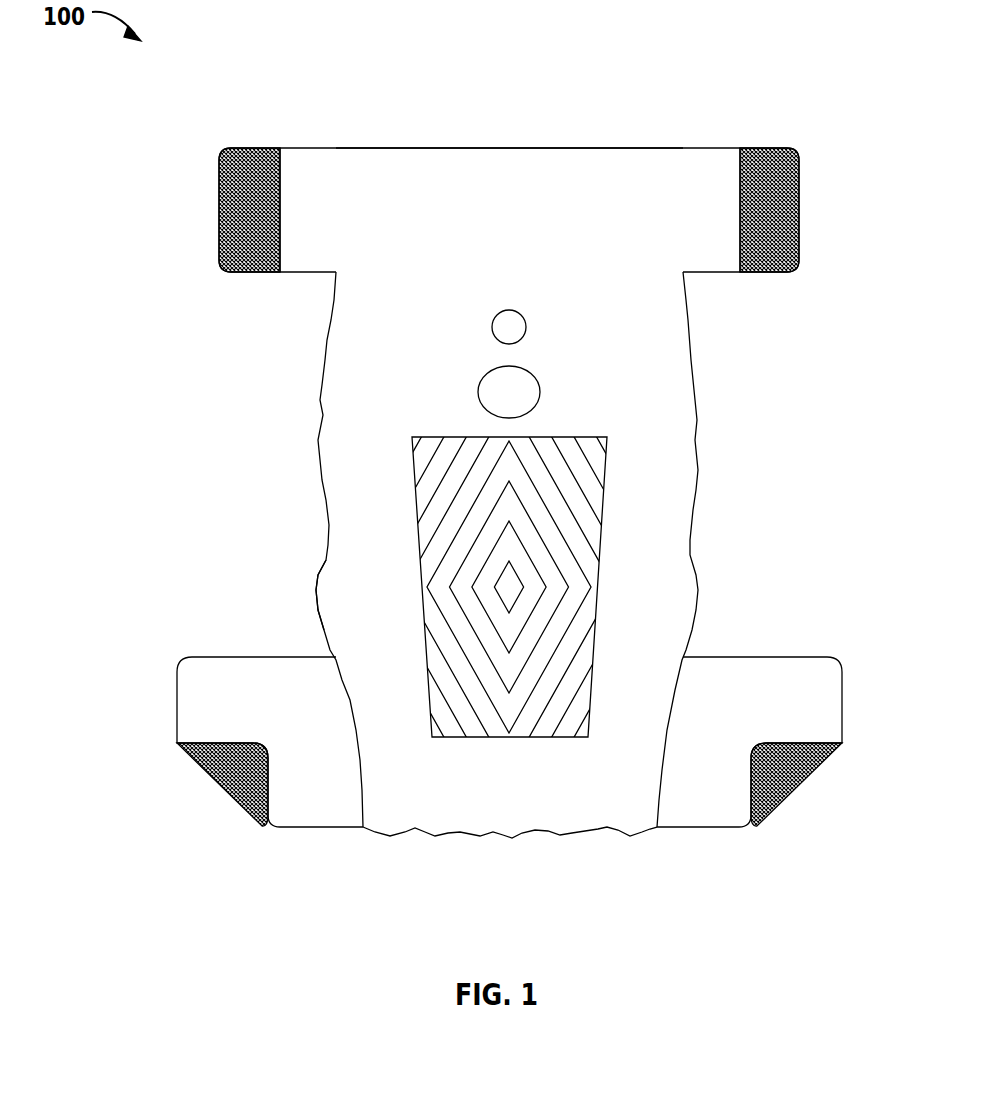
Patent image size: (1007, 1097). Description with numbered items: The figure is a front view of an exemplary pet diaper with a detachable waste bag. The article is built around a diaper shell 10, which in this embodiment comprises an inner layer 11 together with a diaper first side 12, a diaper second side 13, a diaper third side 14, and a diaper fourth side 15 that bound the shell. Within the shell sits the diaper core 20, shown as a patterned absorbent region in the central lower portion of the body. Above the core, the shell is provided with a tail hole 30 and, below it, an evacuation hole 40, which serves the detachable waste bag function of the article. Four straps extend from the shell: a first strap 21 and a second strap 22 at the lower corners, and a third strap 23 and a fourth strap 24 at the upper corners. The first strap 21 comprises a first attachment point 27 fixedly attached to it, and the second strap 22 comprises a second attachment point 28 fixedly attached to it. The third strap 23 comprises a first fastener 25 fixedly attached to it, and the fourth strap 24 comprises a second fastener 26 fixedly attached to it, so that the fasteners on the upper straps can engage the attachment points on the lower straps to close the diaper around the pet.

The diaper shell 10 is at (588, 180).
The inner layer 11 is at (360, 360).
The diaper first side 12 is at (695, 508).
The diaper second side 13 is at (316, 577).
The diaper third side 14 is at (478, 833).
The diaper fourth side 15 is at (455, 147).
The diaper core 20 is at (595, 459).
The first strap 21 is at (820, 680).
The second strap 22 is at (197, 683).
The third strap 23 is at (705, 172).
The fourth strap 24 is at (314, 158).
The first fastener 25 is at (800, 205).
The second fastener 26 is at (220, 205).
The first attachment point 27 is at (790, 775).
The second attachment point 28 is at (222, 785).
The tail hole 30 is at (527, 327).
The evacuation hole 40 is at (540, 392).